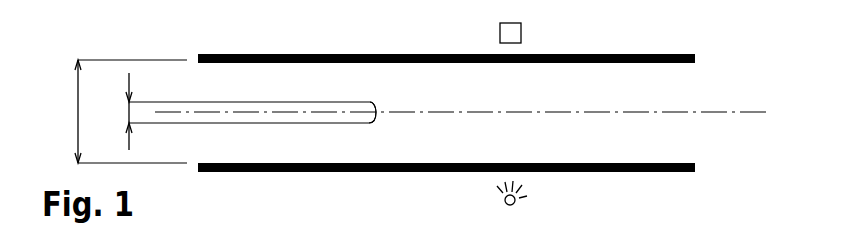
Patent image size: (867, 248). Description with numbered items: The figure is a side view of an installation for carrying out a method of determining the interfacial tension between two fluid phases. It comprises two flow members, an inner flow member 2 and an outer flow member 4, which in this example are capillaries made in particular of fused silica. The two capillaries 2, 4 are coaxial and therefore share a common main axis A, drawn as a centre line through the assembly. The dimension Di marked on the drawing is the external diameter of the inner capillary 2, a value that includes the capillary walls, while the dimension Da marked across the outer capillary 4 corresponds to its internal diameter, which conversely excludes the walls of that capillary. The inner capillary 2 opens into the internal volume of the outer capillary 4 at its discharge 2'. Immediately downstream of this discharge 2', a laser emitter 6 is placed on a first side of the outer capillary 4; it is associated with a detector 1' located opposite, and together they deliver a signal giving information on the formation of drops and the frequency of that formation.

The detector 1' is at (517, 21).
The inner flow member 2 is at (252, 78).
The discharge of the inner capillary 2' is at (379, 67).
The outer flow member 4 is at (251, 53).
The laser emitter 6 is at (515, 204).
The main axis A is at (729, 112).
The outer diameter Da is at (117, 111).
The external diameter of the inner capillary Di is at (116, 111).